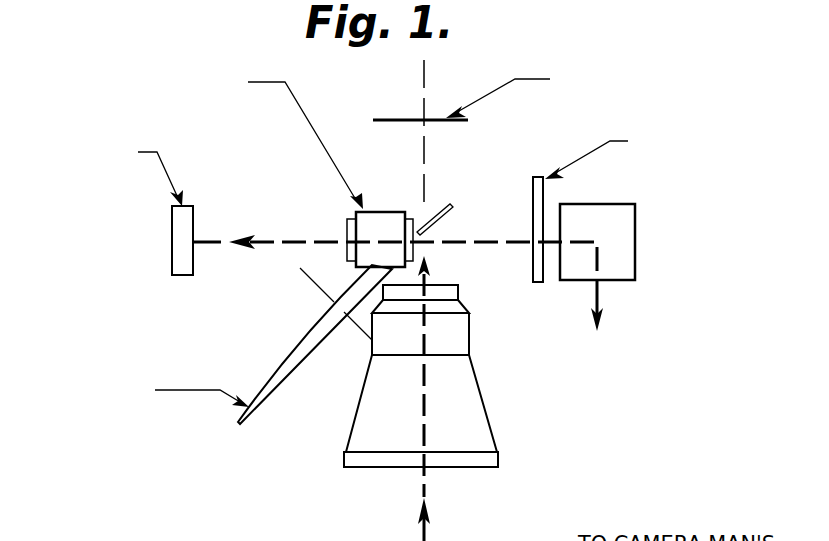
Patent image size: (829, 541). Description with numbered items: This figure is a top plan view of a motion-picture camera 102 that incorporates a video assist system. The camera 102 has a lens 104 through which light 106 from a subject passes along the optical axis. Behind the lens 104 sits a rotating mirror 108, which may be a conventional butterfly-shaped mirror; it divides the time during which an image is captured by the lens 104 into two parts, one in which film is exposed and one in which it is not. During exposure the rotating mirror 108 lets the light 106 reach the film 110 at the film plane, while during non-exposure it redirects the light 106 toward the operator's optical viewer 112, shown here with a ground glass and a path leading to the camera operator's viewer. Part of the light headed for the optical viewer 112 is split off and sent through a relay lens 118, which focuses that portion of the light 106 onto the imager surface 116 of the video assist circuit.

The motion-picture camera 102 is at (213, 473).
The lens 104 is at (497, 425).
The light 106 is at (426, 535).
The rotating mirror 108 is at (268, 397).
The film 110 is at (453, 121).
The operator's optical viewer 112 is at (600, 300).
The imager surface 116 is at (193, 266).
The relay lens 118 is at (388, 212).